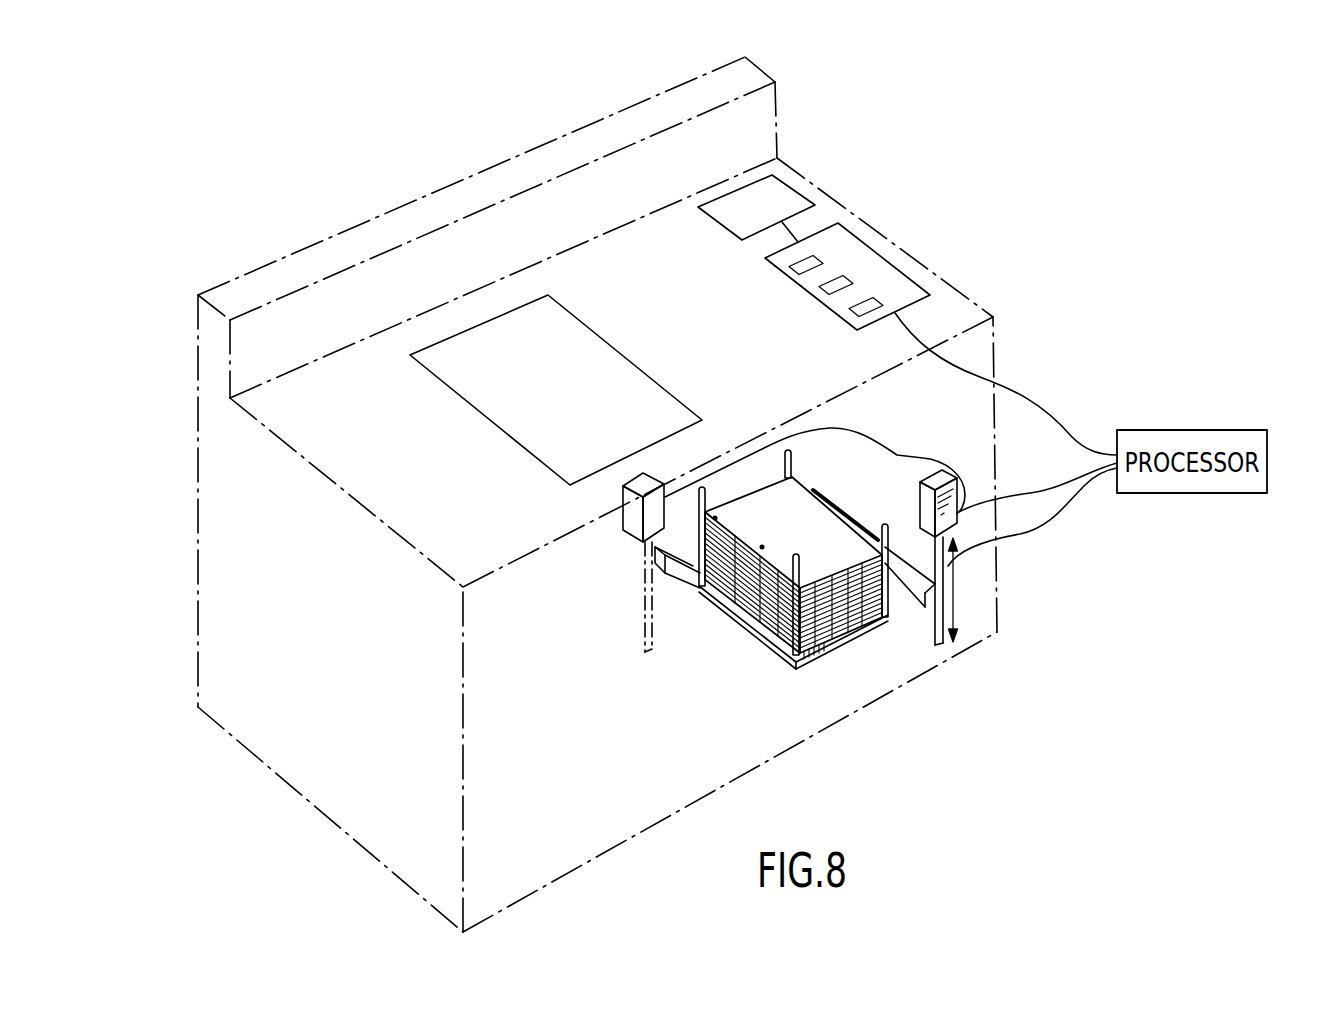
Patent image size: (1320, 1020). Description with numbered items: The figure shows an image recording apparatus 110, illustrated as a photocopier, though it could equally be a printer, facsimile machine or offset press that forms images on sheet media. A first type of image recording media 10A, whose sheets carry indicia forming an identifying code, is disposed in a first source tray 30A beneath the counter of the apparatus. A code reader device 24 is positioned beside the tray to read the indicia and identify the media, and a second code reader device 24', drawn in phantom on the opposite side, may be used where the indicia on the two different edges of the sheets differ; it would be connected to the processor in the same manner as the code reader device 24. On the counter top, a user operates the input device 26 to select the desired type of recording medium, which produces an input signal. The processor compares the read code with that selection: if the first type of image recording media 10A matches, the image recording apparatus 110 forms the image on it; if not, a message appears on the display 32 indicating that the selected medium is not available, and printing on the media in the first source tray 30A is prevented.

The image recording apparatus 110 is at (450, 165).
The display 32 is at (802, 192).
The input device 26 is at (892, 267).
The code reader device 24 is at (891, 561).
The second code reader device 24' is at (623, 562).
The first type of image recording media 10A is at (867, 613).
The first source tray 30A is at (828, 648).